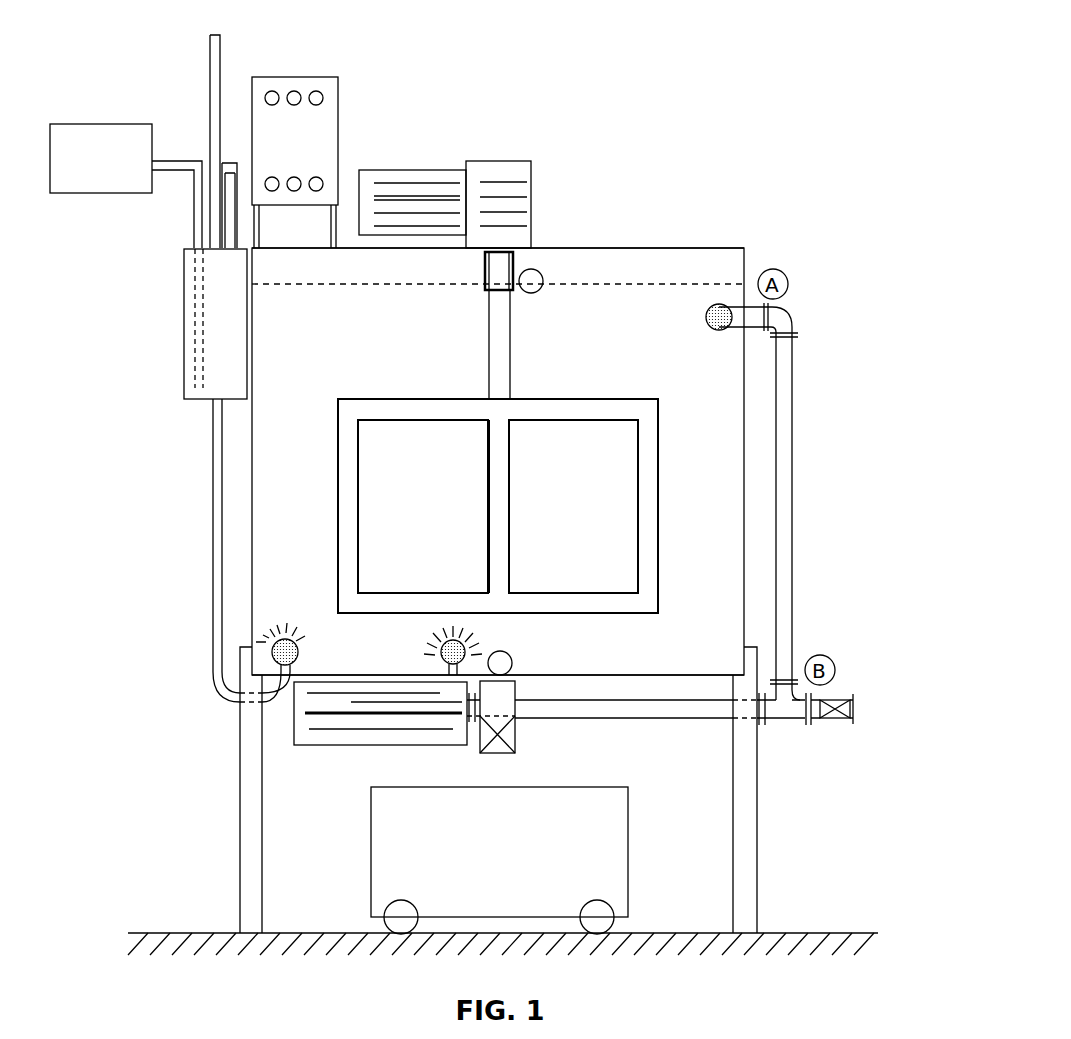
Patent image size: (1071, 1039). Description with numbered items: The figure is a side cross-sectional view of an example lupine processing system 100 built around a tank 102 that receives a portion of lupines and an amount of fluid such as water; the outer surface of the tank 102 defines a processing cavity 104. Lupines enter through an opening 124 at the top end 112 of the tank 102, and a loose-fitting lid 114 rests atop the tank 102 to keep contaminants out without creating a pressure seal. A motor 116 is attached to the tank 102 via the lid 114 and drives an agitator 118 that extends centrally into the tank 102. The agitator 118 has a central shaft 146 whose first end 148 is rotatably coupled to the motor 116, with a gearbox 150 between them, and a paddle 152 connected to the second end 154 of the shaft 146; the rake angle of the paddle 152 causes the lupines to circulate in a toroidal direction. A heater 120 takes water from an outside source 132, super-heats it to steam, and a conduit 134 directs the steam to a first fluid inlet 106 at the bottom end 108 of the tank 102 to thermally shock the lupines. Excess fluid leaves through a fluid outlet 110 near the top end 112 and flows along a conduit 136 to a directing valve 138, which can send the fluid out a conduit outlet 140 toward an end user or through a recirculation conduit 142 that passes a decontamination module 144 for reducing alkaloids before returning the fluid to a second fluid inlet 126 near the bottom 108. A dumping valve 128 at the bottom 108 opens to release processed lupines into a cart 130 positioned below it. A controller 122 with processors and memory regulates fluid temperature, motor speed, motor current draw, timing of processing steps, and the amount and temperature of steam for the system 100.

The lupine processing system 100 is at (742, 30).
The tank 102 is at (745, 404).
The processing cavity 104 is at (704, 664).
The fluid inlet 106 is at (296, 652).
The bottom end 108 is at (595, 677).
The fluid outlet 110 is at (710, 322).
The top end 112 is at (632, 248).
The lid 114 is at (687, 262).
The motor 116 is at (414, 176).
The agitator 118 is at (377, 367).
The heater 120 is at (184, 313).
The controller 122 is at (300, 83).
The opening 124 is at (548, 202).
The second fluid inlet 126 is at (465, 652).
The dumping valve 128 is at (510, 728).
The cart 130 is at (518, 865).
The outside source 132 is at (122, 172).
The conduit 134 is at (213, 455).
The conduit 136 is at (793, 462).
The directing valve 138 is at (797, 700).
The conduit outlet 140 is at (850, 707).
The recirculation conduit 142 is at (708, 717).
The decontamination module 144 is at (335, 713).
The central shaft 146 is at (499, 318).
The first end 148 is at (512, 262).
The gearbox 150 is at (510, 170).
The paddle 152 is at (652, 488).
The second end 154 is at (494, 601).